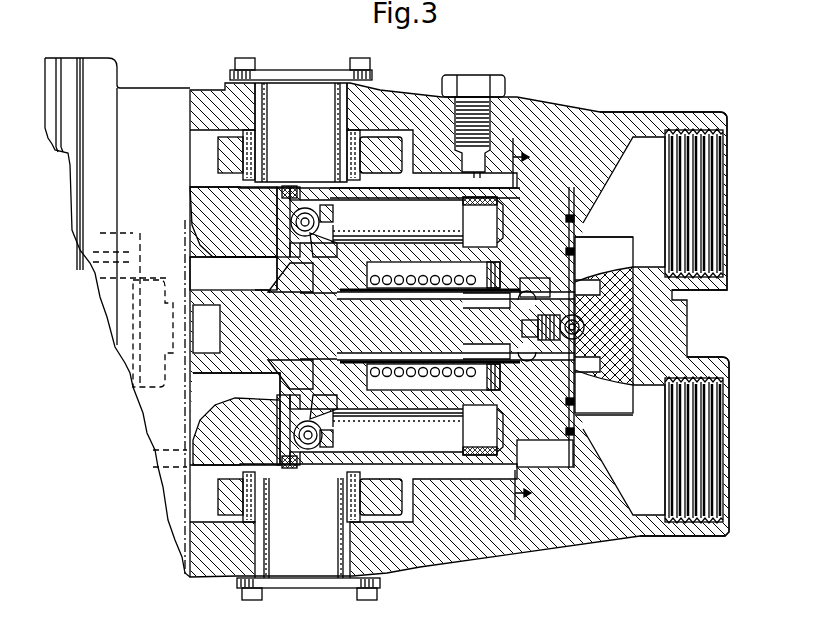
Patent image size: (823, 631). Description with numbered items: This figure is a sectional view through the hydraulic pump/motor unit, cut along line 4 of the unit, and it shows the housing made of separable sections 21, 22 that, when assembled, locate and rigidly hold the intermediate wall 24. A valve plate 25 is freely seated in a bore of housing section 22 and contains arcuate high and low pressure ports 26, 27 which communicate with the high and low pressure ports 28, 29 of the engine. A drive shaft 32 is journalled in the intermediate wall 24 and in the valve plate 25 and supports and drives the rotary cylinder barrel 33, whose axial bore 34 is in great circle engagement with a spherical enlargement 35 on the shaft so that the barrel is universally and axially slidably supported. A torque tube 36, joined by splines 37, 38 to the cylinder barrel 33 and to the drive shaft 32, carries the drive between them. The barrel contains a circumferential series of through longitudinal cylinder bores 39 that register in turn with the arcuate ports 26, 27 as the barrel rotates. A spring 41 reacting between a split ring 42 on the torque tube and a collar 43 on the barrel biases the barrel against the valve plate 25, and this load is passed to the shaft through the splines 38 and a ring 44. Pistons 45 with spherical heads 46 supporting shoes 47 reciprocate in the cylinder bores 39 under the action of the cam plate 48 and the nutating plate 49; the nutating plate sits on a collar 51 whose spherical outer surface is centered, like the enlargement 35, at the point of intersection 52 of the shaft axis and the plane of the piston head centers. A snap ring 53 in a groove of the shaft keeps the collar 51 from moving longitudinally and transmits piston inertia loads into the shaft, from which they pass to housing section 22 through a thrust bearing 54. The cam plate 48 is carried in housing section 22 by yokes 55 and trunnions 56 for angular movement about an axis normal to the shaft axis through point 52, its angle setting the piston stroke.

The section line 4- 4 is at (486, 307).
The housing section 21 is at (44, 70).
The housing section 22 is at (155, 97).
The intermediate wall 24 is at (71, 58).
The valve plate 25 is at (552, 199).
The arcuate high pressure port 26 is at (601, 442).
The arcuate low pressure port 27 is at (547, 327).
The high pressure port 28 is at (721, 443).
The low pressure port 29 is at (723, 207).
The drive shaft 32 is at (236, 385).
The rotary cylinder barrel 33 is at (343, 192).
The axial bore 34 is at (412, 281).
The spherical enlargement 35 is at (322, 324).
The torque tube 36 is at (437, 345).
The splines 37 is at (371, 300).
The splines 38 is at (500, 309).
The cylinder bores 39 is at (489, 230).
The spring 41 is at (433, 380).
The split ring 42 is at (390, 377).
The collar 43 is at (465, 275).
The ring 44 is at (462, 300).
The pistons 45 is at (425, 225).
The spherical heads 46 is at (319, 220).
The shoes 47 is at (292, 185).
The cam plate 48 is at (206, 187).
The nutating plate 49 is at (268, 270).
The collar 51 is at (252, 293).
The point of intersection 52 is at (312, 324).
The snap ring 53 is at (290, 297).
The thrust bearing 54 is at (585, 290).
The yoke 55 is at (390, 136).
The trunnion 56 is at (300, 69).